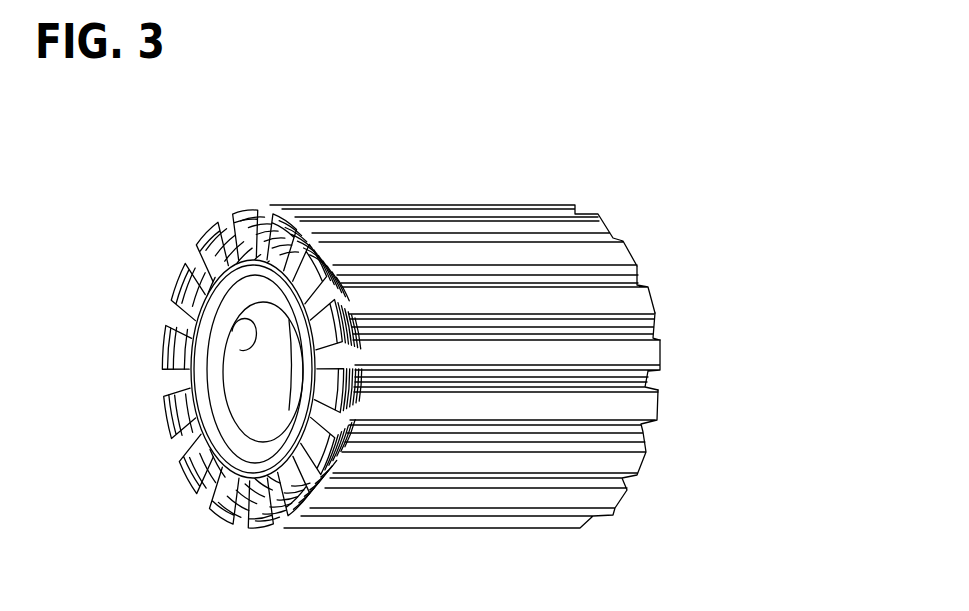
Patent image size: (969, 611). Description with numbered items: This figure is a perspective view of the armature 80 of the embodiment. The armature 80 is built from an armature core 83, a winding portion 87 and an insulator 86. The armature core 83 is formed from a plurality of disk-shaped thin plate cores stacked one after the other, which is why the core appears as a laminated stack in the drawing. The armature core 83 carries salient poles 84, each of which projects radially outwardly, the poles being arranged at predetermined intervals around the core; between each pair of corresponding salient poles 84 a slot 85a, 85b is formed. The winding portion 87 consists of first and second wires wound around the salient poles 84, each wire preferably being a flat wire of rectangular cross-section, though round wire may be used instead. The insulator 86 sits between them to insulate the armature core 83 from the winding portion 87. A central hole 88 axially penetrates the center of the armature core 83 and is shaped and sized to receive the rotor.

The armature 80 is at (405, 146).
The armature core 83 is at (235, 433).
The salient pole 84 is at (632, 305).
The slot 85a is at (645, 275).
The slot 85b is at (657, 332).
The insulator 86 is at (203, 408).
The winding portion 87 is at (607, 323).
The central hole 88 is at (243, 350).